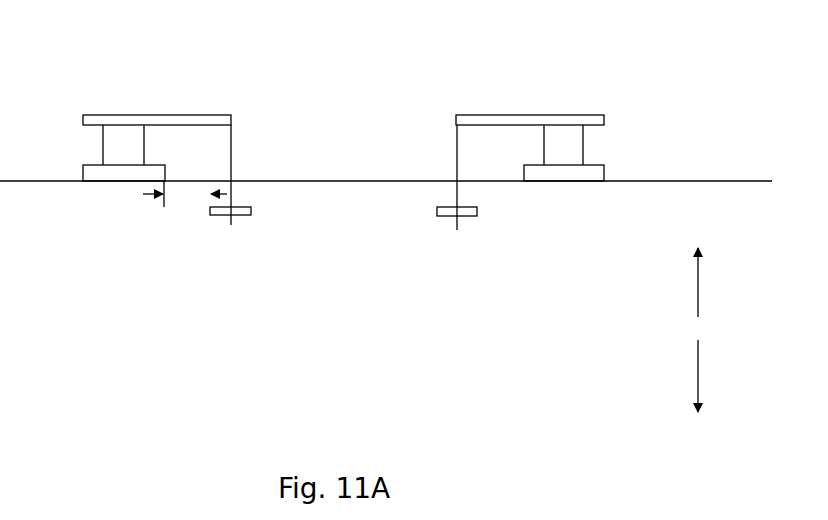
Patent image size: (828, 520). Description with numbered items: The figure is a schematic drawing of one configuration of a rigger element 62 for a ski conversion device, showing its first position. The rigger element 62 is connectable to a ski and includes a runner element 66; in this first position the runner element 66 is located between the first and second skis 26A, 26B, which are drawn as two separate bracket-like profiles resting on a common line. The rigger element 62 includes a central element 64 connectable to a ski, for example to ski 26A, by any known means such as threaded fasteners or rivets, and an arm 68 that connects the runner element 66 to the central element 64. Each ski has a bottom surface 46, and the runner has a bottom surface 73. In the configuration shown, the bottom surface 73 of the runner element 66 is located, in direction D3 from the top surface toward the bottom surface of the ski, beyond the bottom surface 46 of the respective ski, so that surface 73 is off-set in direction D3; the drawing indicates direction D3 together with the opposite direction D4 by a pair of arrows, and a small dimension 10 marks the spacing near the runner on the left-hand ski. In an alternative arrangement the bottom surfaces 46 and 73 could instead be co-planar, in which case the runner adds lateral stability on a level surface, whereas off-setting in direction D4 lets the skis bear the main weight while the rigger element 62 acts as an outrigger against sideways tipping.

The gap / distance between first and second portions 10 is at (185, 196).
The ski 26A is at (118, 177).
The ski 26B is at (578, 201).
The bottom surface 46 is at (562, 182).
The rigger element 62 is at (528, 151).
The central element 64 is at (563, 145).
The runner element 66 is at (457, 230).
The arm 68 is at (514, 115).
The bottom surface 73 is at (231, 225).
The direction D3 is at (698, 368).
The direction D4 is at (698, 290).